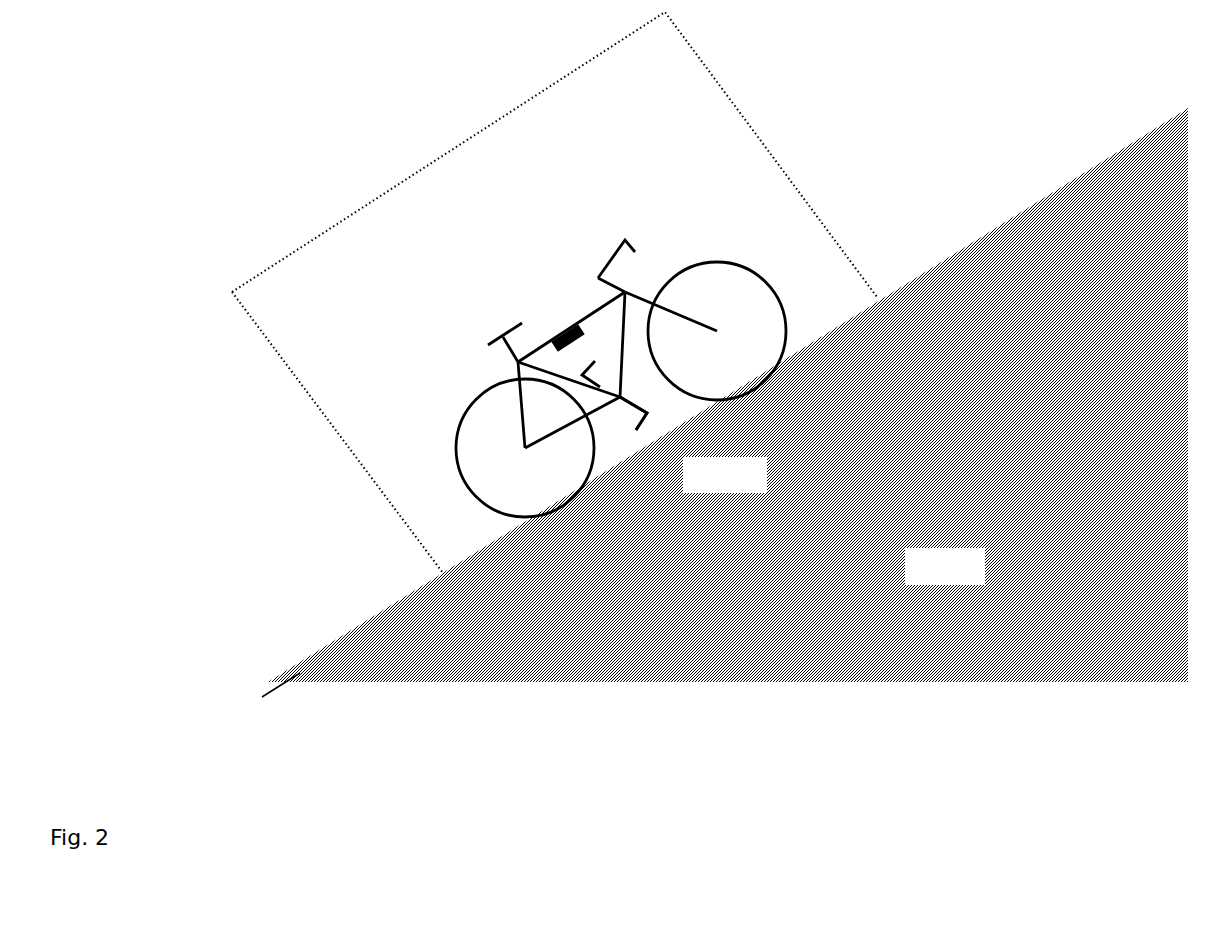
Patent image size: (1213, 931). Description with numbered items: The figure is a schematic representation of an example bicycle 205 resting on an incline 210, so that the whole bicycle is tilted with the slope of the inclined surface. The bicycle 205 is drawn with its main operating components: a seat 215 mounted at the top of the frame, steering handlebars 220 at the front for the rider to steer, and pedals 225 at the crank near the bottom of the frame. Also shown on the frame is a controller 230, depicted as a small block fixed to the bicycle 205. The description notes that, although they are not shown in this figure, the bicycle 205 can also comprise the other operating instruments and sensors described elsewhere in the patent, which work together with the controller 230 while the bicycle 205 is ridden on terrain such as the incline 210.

The bicycle 205 is at (554, 292).
The incline 210 is at (725, 402).
The seat 215 is at (492, 339).
The steering handlebars 220 is at (622, 237).
The pedals 225 is at (653, 427).
The controller 230 is at (557, 322).